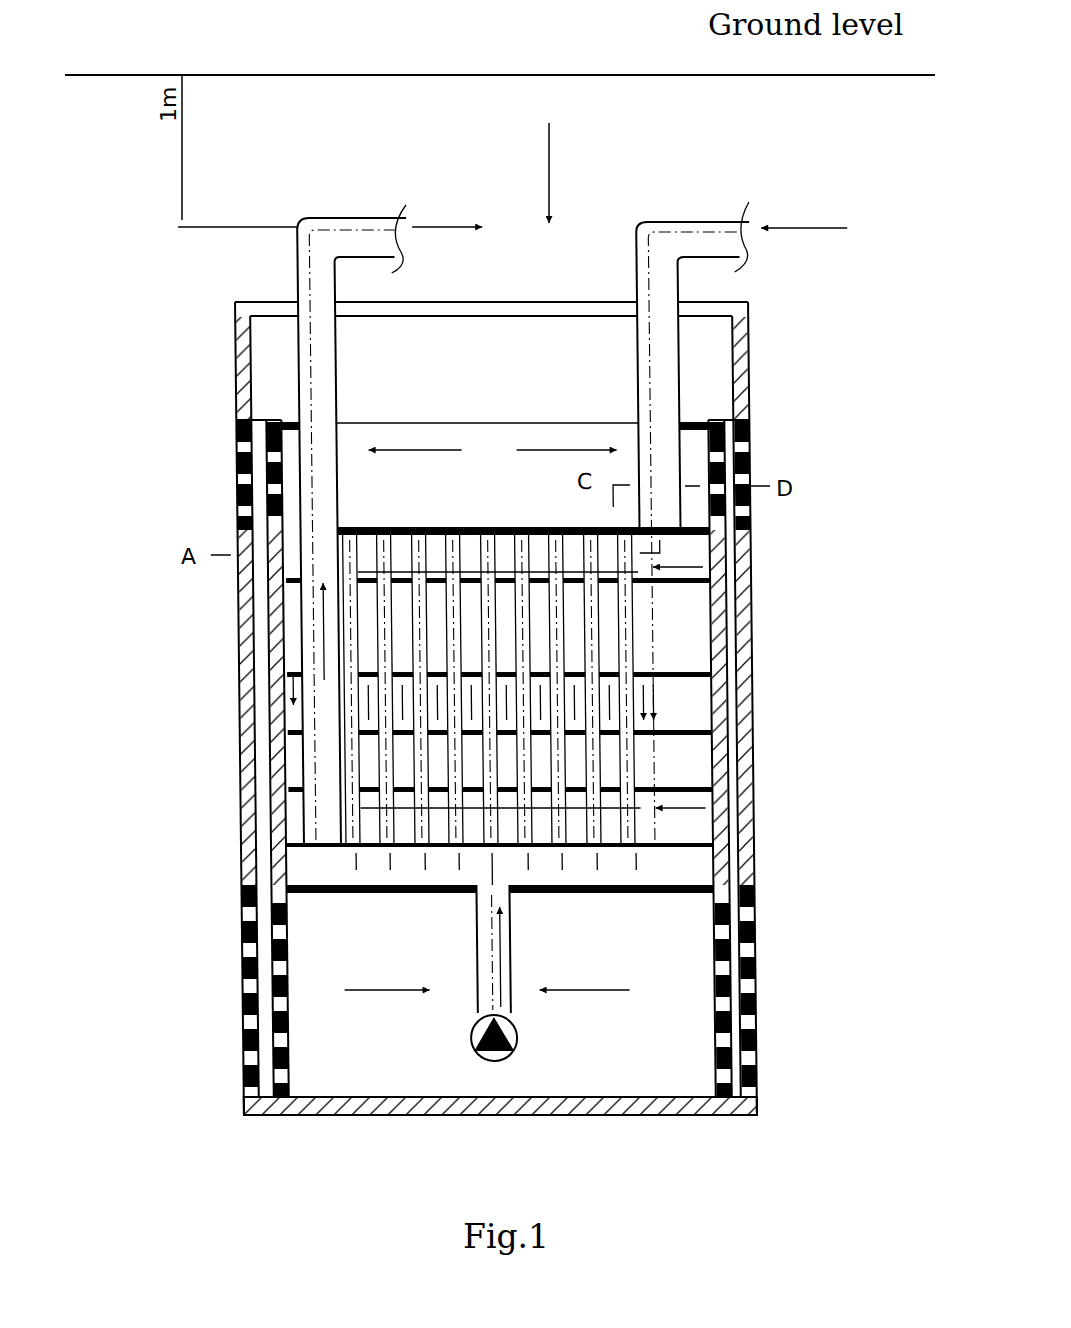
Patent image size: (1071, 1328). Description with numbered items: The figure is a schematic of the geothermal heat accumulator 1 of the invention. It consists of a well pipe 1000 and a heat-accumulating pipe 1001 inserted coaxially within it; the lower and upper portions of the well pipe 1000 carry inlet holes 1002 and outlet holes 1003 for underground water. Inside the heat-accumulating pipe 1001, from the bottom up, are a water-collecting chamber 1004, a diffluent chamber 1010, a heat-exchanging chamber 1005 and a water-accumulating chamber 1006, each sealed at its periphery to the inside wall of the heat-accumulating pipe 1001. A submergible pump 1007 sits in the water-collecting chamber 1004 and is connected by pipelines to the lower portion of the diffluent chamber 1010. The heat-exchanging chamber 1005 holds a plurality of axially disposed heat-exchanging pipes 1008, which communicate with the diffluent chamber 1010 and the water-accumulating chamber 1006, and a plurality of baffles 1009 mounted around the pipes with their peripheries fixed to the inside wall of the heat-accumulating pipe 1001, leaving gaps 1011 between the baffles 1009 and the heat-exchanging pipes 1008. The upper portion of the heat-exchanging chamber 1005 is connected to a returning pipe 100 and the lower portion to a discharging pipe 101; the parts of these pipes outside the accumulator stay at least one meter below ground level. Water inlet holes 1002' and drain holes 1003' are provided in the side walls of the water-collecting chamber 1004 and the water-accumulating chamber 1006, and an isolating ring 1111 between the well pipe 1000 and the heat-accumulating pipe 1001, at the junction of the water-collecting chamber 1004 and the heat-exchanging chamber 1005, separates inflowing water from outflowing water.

The geothermal heat accumulator 1 is at (550, 159).
The returning pipe 100 is at (690, 242).
The discharging pipe 101 is at (340, 248).
The well pipe 1000 is at (251, 630).
The heat-accumulating pipe 1001 is at (289, 420).
The inlet holes 1002 is at (222, 991).
The water inlet holes 1002' is at (794, 991).
The outlet holes 1003 is at (216, 475).
The drain holes 1003' is at (780, 476).
The water-collecting chamber 1004 is at (684, 1065).
The heat-exchanging chamber 1005 is at (682, 645).
The water-accumulating chamber 1006 is at (691, 460).
The submergible pump 1007 is at (509, 1036).
The heat-exchanging pipes 1008 is at (343, 710).
The baffles 1009 is at (695, 727).
The diffluent chamber 1010 is at (684, 860).
The gaps 1011 is at (443, 565).
The isolating ring 1111 is at (727, 872).